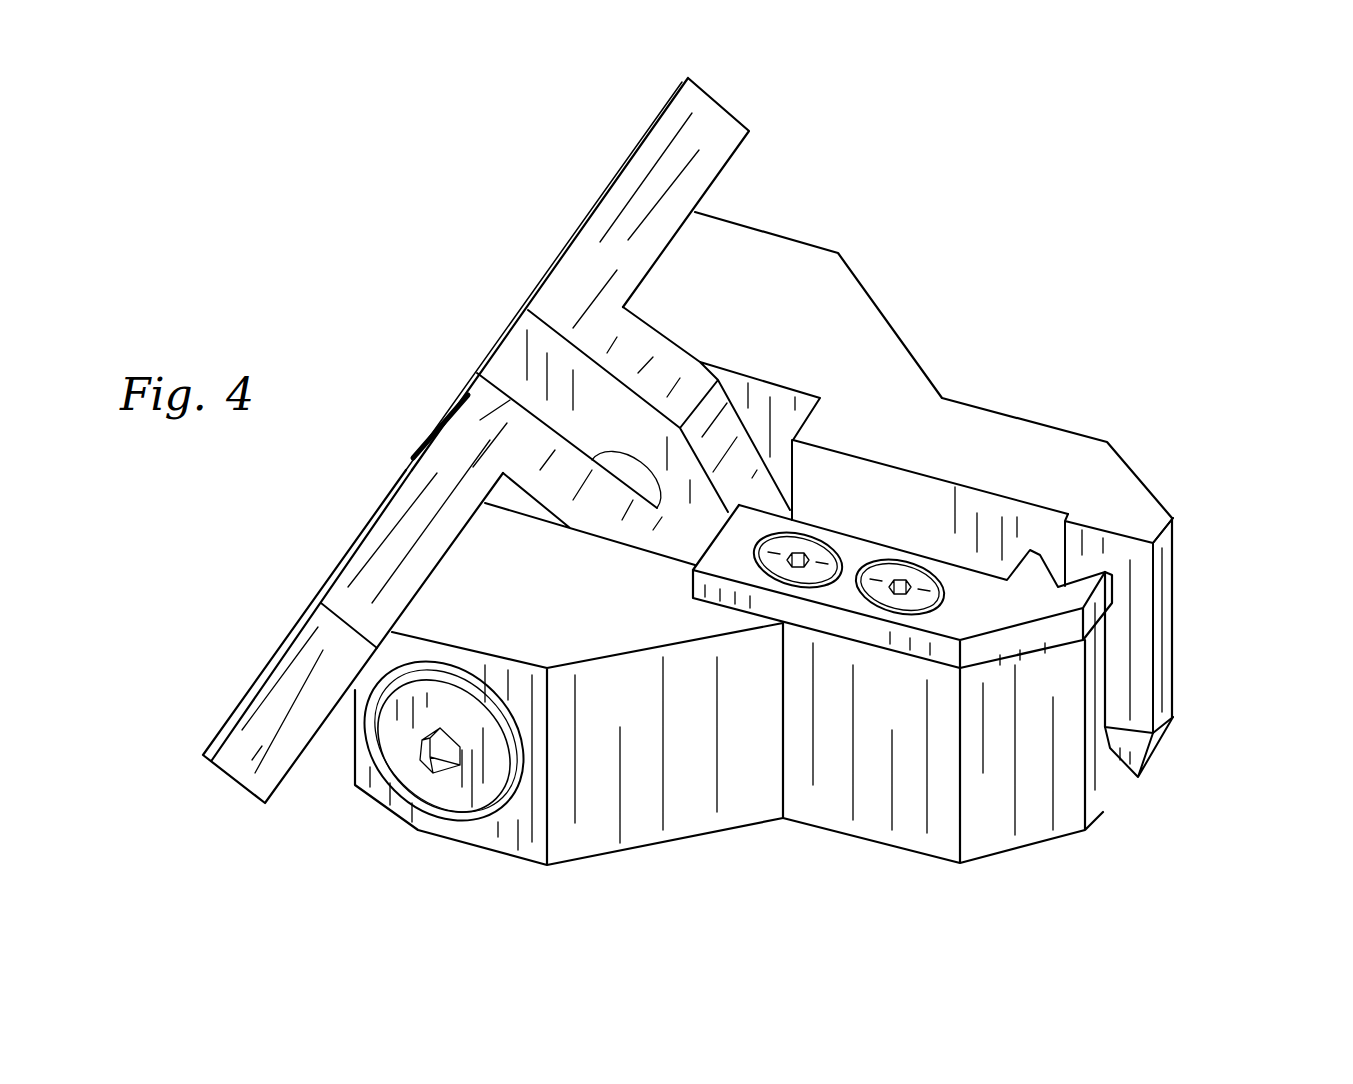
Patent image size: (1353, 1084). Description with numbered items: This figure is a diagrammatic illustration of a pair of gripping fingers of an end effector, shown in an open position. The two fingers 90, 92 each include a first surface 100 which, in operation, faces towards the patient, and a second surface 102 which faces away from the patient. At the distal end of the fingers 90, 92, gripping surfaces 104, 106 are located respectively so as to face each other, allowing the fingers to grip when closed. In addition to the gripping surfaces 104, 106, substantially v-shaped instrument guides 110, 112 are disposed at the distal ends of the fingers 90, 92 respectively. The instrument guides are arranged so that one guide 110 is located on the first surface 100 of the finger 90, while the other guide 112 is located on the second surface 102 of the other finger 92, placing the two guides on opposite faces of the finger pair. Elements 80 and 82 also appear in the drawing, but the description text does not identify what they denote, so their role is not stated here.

The upper rod 80 is at (725, 105).
The lower rod 82 is at (233, 785).
The finger 90 is at (908, 340).
The finger 92 is at (685, 803).
The first surface 100 is at (1055, 840).
The second surface 102 is at (811, 352).
The gripping surface 104 is at (1140, 590).
The gripping surface 106 is at (1107, 653).
The instrument guide 110 is at (1158, 754).
The instrument guide 112 is at (948, 566).